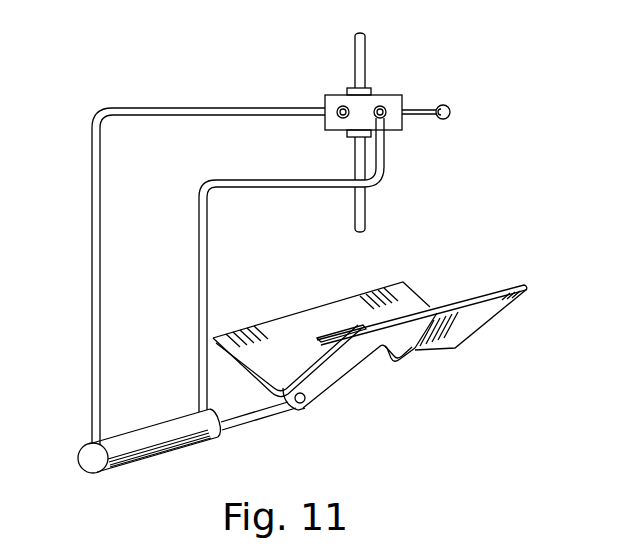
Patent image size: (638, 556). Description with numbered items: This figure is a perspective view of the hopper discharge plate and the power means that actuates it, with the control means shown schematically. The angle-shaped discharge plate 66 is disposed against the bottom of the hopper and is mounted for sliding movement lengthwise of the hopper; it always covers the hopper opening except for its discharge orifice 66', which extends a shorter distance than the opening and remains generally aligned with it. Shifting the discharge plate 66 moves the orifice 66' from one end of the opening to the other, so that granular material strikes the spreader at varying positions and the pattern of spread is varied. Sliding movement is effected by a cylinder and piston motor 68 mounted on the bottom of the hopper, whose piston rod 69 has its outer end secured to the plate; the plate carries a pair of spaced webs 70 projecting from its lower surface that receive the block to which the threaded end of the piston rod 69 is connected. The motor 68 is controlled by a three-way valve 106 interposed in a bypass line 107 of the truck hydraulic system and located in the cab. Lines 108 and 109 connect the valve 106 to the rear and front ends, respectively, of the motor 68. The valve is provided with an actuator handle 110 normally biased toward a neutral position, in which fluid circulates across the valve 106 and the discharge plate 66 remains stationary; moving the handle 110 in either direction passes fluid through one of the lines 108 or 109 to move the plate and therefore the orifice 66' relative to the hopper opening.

The discharge plate 66 is at (435, 317).
The discharge orifice 66' is at (390, 376).
The cylinder and piston motor 68 is at (142, 452).
The piston rod 69 is at (258, 413).
The spaced webs 70 is at (316, 388).
The three-way valve 106 is at (390, 100).
The bypass line 107 is at (363, 48).
The line 108 is at (91, 279).
The line 109 is at (207, 263).
The actuator handle 110 is at (450, 112).